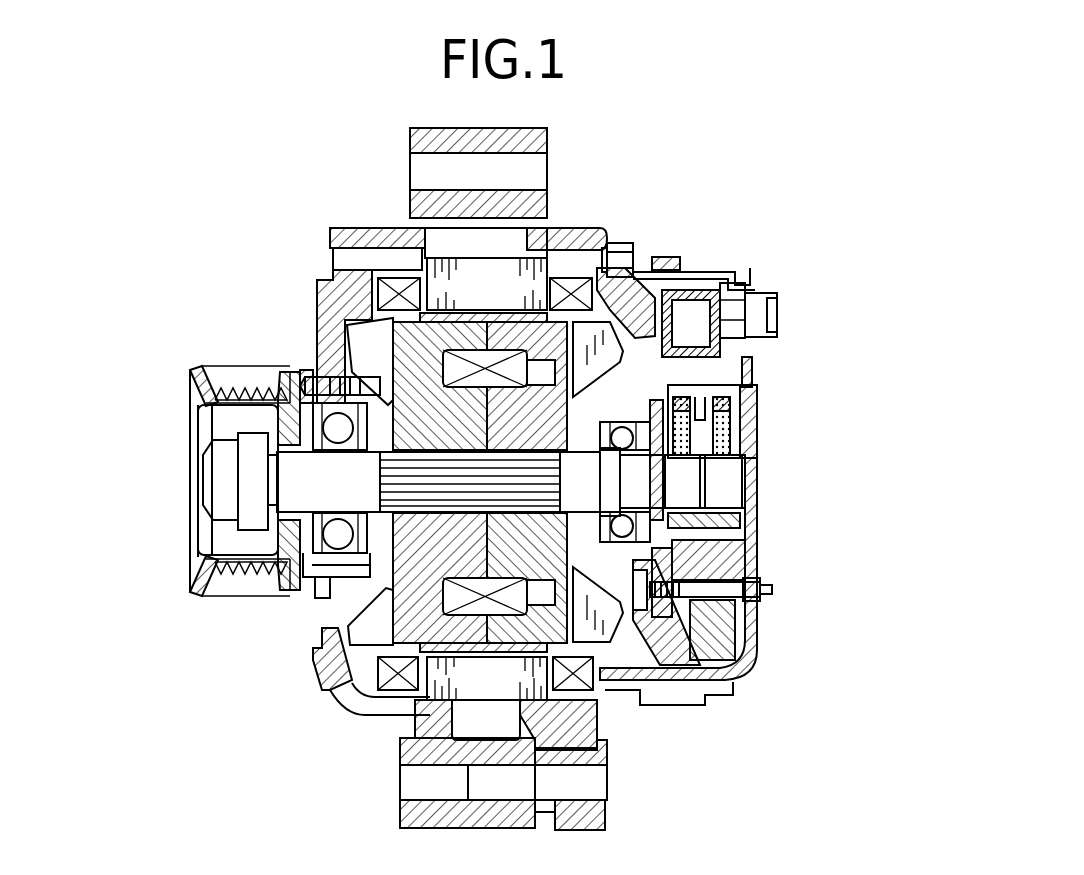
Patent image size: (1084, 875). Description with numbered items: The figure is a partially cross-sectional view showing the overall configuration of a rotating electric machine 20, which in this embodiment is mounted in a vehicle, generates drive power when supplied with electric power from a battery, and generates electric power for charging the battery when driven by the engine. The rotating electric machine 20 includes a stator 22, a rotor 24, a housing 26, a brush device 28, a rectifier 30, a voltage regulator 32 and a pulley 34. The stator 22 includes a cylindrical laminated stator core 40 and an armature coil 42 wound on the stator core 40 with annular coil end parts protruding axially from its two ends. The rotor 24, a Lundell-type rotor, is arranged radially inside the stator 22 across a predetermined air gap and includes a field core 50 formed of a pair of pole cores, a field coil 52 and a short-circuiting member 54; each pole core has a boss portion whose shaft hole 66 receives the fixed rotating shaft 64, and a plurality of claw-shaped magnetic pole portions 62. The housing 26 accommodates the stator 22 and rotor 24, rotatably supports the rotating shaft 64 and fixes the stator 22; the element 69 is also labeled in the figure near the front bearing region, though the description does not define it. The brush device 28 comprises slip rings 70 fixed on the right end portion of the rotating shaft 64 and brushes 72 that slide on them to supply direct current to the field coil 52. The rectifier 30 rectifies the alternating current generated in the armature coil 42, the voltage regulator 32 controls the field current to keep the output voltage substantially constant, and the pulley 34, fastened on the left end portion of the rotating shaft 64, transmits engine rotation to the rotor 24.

The rotating electric machine 20 is at (640, 182).
The stator 22 is at (365, 292).
The rotor 24 is at (385, 585).
The housing 26 is at (330, 345).
The brush device 28 is at (832, 388).
The rectifier 30 is at (747, 637).
The voltage regulator 32 is at (730, 298).
The pulley 34 is at (190, 575).
The stator core 40 is at (455, 297).
The armature coil 42 is at (397, 290).
The field core 50 is at (537, 403).
The field coil 52 is at (463, 600).
The short-circuiting member 54 is at (505, 320).
The claw-shaped magnetic pole portions 62 is at (625, 262).
The rotating shaft 64 is at (290, 565).
The shaft hole 66 is at (300, 470).
The front bearing 69 is at (337, 425).
The slip rings 70 is at (735, 478).
The brushes 72 is at (745, 428).